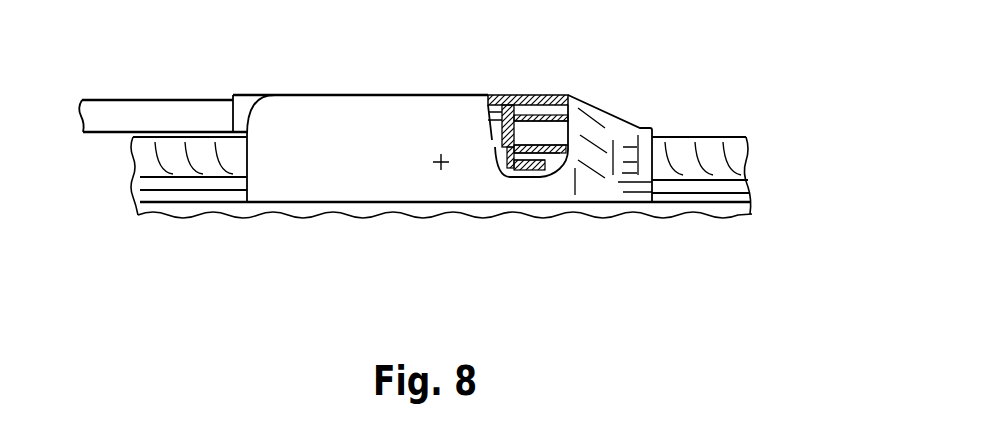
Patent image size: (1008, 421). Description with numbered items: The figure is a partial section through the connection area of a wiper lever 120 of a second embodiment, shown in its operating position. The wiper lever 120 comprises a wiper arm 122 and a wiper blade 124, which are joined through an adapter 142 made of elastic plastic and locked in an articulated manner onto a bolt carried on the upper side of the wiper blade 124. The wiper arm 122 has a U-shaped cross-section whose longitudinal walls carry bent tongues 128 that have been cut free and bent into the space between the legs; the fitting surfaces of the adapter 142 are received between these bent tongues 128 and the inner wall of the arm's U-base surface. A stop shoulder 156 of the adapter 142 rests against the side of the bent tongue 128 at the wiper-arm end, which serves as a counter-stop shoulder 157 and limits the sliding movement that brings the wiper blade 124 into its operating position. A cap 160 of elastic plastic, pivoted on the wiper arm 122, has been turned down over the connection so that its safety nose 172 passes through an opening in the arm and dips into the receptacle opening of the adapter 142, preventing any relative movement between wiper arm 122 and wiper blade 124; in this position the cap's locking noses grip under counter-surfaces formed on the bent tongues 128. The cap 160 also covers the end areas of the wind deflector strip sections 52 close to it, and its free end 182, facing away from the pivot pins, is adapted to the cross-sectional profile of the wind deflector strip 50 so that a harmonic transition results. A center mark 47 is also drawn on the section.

The center mark / axis 47 is at (441, 162).
The wind deflector strip 50 is at (677, 131).
The wind deflector strip sections 52 is at (147, 158).
The wiper lever 120 is at (591, 98).
The wiper arm 122 is at (142, 112).
The wiper blade 124 is at (759, 191).
The bent tongues 128 is at (540, 165).
The adapter 142 is at (540, 95).
The stop shoulder 156 is at (513, 168).
The counter-stop shoulder 157 is at (498, 167).
The cap 160 is at (444, 91).
The safety nose 172 is at (502, 140).
The free end of the cap 182 is at (652, 197).